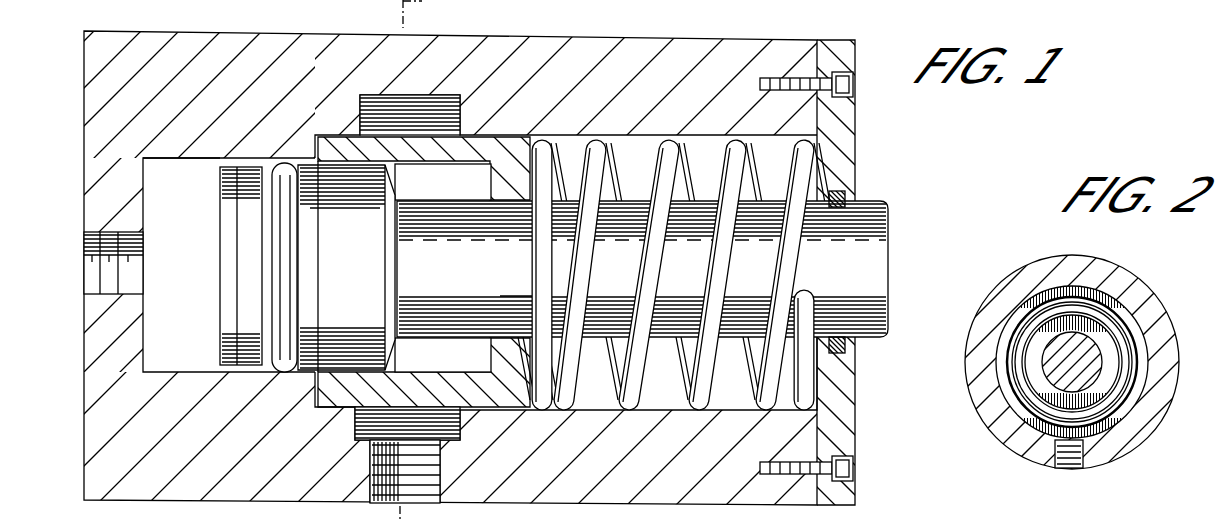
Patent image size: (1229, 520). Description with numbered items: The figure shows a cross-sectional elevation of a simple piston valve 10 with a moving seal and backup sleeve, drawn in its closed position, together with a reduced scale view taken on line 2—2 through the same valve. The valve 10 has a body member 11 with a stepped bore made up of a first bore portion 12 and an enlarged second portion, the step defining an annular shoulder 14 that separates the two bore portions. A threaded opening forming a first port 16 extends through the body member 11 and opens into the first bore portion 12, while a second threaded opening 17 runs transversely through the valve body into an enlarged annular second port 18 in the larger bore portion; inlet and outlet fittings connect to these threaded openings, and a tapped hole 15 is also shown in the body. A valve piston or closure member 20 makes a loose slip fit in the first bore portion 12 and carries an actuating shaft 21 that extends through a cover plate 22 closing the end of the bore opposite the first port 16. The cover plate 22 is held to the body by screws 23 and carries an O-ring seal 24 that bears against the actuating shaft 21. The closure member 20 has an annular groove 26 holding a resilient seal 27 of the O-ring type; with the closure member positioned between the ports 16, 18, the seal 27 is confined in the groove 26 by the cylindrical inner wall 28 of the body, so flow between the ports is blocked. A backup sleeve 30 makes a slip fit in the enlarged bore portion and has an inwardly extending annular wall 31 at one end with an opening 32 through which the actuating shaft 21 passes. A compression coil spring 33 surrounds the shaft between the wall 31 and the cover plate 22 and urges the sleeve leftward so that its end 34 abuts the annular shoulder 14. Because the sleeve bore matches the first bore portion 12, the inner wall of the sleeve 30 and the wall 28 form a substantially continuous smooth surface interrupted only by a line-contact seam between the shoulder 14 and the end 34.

In FIG. 1, the section line 2- 2 is at (436, 260).
In FIG. 1, the piston valve 10 is at (946, 182).
In FIG. 1, the body member 11 is at (778, 38).
In FIG. 2, the body member 11 is at (1143, 288).
In FIG. 1, the first bore portion 12 is at (186, 279).
In FIG. 1, the annular shoulder 14 is at (320, 142).
In FIG. 1, the tapped hole 15 is at (430, 496).
In FIG. 1, the first port 16 is at (90, 277).
In FIG. 2, the second threaded opening 17 is at (1077, 470).
In FIG. 1, the second port 18 is at (357, 432).
In FIG. 2, the second port 18 is at (1003, 343).
In FIG. 1, the closure member 20 is at (343, 266).
In FIG. 2, the closure member 20 is at (1045, 398).
In FIG. 1, the actuating shaft 21 is at (444, 281).
In FIG. 2, the actuating shaft 21 is at (1073, 378).
In FIG. 1, the cover plate 22 is at (856, 402).
In FIG. 1, the screws 23 is at (853, 80).
In FIG. 1, the O-ring seal 24 is at (846, 200).
In FIG. 1, the annular groove 26 is at (222, 345).
In FIG. 1, the resilient seal 27 is at (278, 284).
In FIG. 2, the resilient seal 27 is at (1035, 382).
In FIG. 1, the cylindrical inner wall 28 is at (197, 162).
In FIG. 1, the backup sleeve 30 is at (433, 165).
In FIG. 2, the backup sleeve 30 is at (1013, 360).
In FIG. 1, the annular wall 31 is at (490, 346).
In FIG. 1, the opening 32 is at (515, 336).
In FIG. 1, the compression coil spring 33 is at (537, 255).
In FIG. 1, the end of the sleeve 34 is at (318, 160).